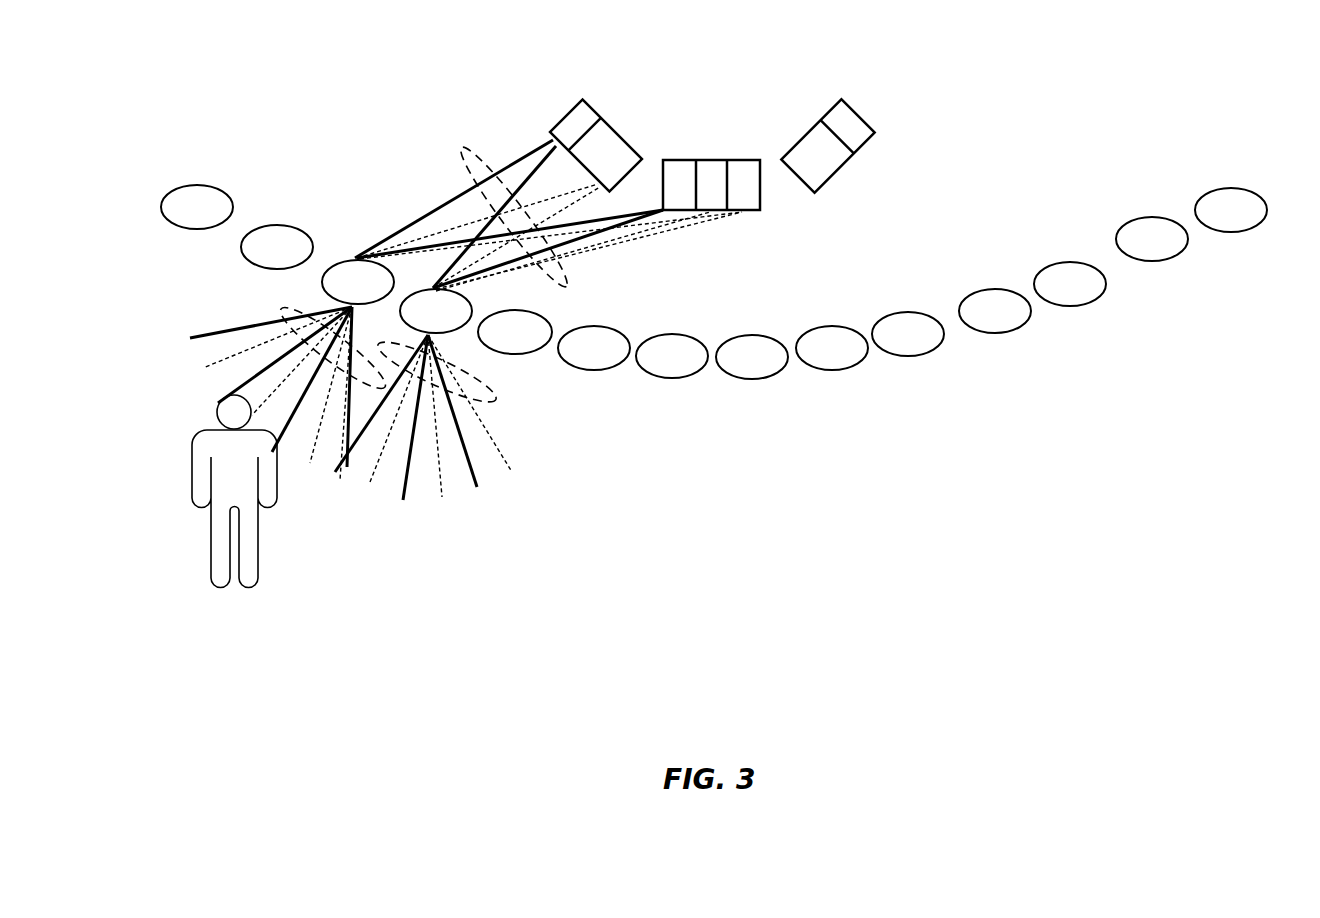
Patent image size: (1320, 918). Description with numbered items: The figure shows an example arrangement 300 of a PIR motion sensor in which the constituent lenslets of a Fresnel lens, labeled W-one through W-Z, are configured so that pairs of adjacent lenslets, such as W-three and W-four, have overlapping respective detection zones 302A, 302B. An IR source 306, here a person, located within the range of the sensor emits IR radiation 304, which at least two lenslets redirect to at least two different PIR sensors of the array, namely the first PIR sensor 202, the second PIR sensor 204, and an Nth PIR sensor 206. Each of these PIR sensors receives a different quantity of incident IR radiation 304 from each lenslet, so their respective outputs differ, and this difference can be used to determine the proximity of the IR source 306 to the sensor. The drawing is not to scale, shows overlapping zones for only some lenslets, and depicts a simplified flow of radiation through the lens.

The example arrangement 300 is at (287, 84).
The first PIR sensor 202 is at (583, 100).
The second PIR sensor 204 is at (707, 160).
The Nth PIR sensor 206 is at (842, 100).
The IR radiation 304 is at (463, 147).
The detection zone 302A is at (280, 310).
The detection zone 302B is at (492, 397).
The IR source 306 is at (224, 588).